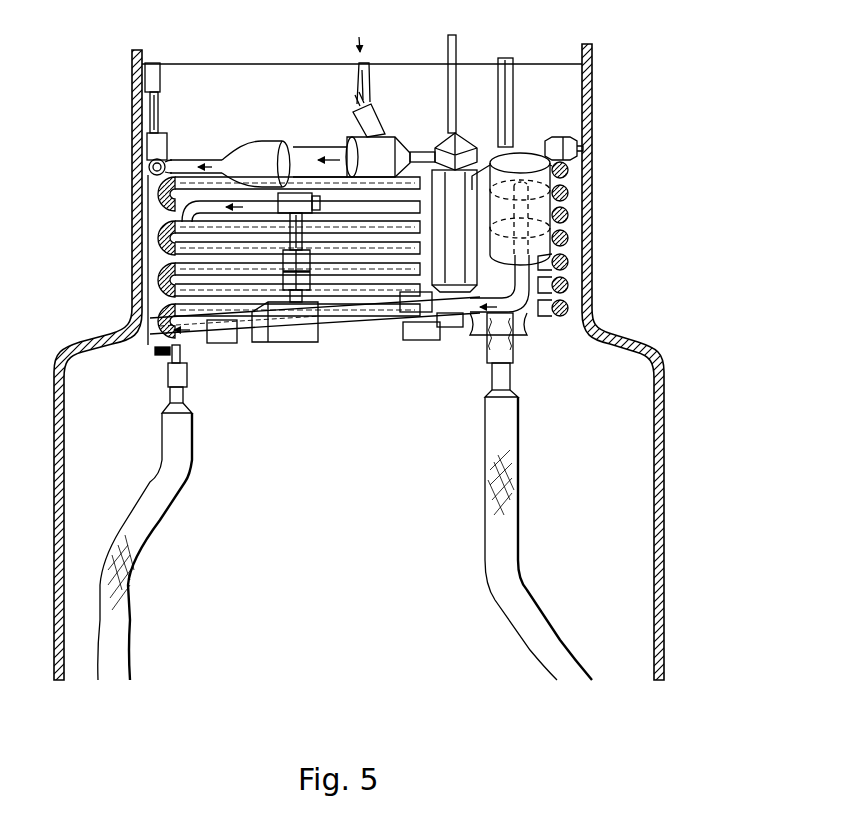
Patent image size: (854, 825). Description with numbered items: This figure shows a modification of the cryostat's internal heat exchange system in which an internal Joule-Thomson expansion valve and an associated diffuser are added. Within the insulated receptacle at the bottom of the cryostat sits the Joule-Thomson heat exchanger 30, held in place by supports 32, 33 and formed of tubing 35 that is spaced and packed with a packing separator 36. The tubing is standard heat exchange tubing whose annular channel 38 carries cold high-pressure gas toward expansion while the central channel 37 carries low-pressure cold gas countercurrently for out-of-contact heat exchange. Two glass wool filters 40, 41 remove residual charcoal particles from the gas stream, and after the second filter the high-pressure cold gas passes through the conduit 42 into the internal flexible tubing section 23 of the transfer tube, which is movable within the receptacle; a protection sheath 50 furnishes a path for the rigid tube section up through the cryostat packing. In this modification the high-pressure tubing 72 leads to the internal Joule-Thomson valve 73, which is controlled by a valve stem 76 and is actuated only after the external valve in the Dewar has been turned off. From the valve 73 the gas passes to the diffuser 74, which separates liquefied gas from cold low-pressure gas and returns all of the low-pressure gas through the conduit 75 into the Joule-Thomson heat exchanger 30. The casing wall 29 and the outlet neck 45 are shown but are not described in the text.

The internal flexible tubing section 23 is at (155, 528).
The casing wall 29 is at (590, 270).
The Joule-Thomson heat exchanger 30 is at (415, 143).
The support 32 is at (507, 96).
The support 33 is at (152, 102).
The tubing 35 is at (188, 163).
The packing separator 36 is at (172, 160).
The central channel 37 is at (367, 72).
The annular channel 38 is at (375, 104).
The glass wool filter 40 is at (334, 147).
The glass wool filter 41 is at (385, 338).
The conduit 42 is at (150, 190).
The outlet neck 45 is at (492, 375).
The protection sheath 50 is at (528, 337).
The high-pressure tubing 72 is at (370, 193).
The internal Joule-Thomson valve 73 is at (460, 195).
The diffuser 74 is at (535, 198).
The conduit 75 is at (340, 340).
The valve stem 76 is at (455, 48).